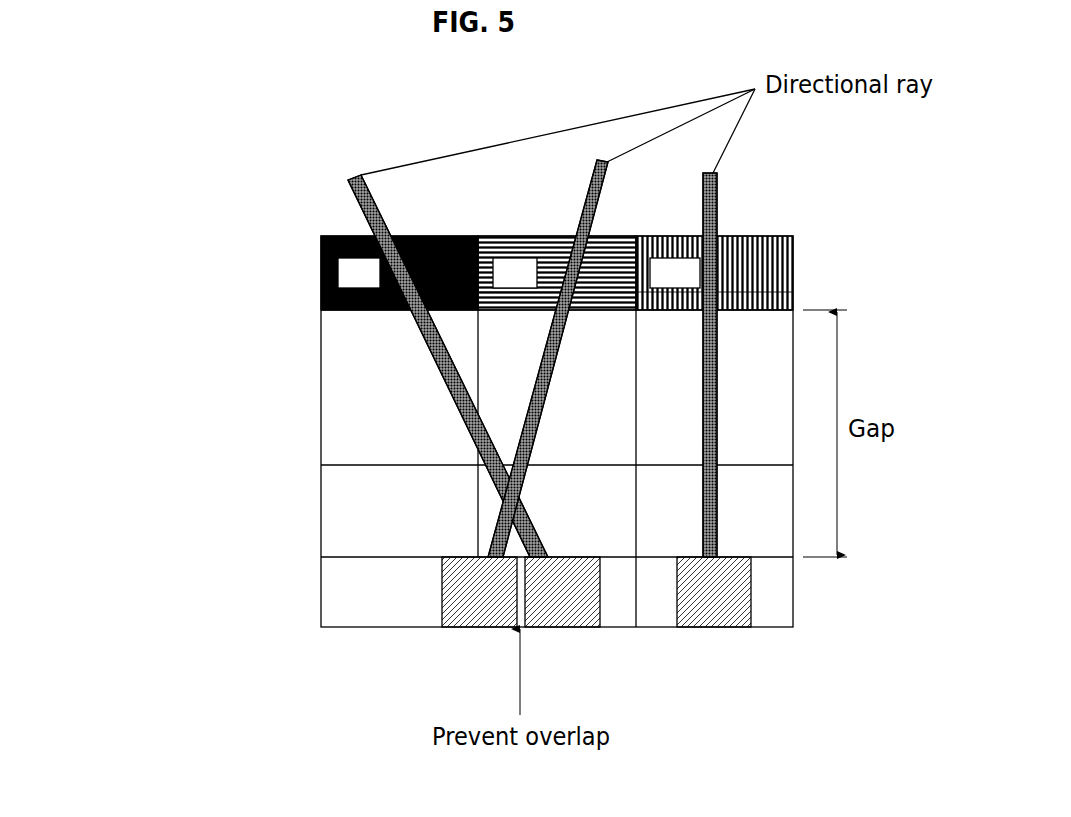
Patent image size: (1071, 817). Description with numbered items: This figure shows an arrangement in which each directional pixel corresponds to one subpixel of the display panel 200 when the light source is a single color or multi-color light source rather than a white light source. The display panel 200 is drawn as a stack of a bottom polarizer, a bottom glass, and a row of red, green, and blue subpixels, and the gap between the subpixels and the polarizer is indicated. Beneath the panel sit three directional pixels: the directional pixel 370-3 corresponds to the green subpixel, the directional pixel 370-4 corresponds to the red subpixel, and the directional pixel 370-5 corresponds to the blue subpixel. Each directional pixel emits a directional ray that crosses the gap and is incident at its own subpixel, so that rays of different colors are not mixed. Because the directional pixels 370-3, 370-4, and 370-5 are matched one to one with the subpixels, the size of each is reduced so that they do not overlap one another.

The display panel 200 is at (122, 247).
The directional pixel 370-3 is at (463, 603).
The directional pixel 370-4 is at (585, 603).
The directional pixel 370-5 is at (718, 603).